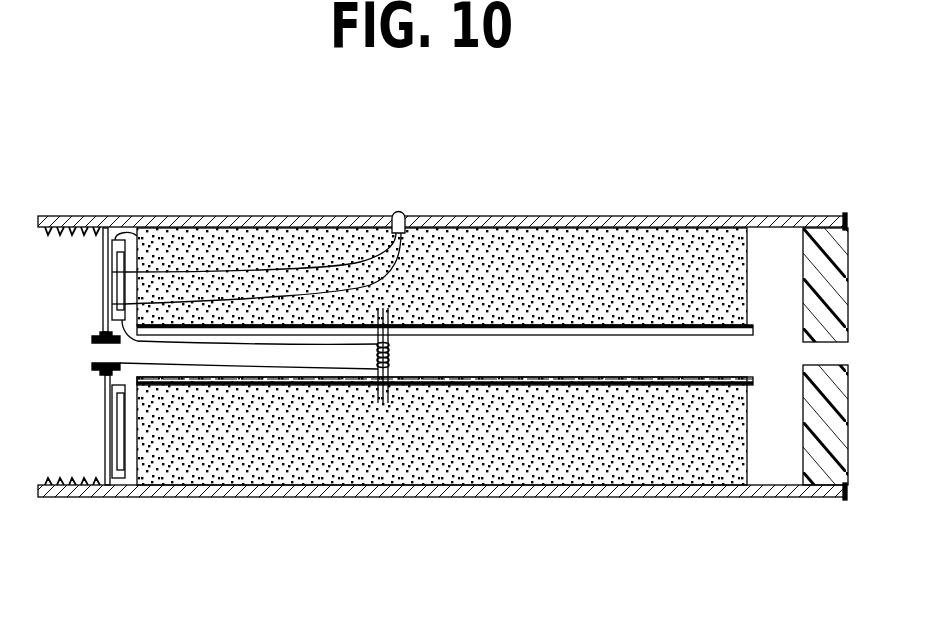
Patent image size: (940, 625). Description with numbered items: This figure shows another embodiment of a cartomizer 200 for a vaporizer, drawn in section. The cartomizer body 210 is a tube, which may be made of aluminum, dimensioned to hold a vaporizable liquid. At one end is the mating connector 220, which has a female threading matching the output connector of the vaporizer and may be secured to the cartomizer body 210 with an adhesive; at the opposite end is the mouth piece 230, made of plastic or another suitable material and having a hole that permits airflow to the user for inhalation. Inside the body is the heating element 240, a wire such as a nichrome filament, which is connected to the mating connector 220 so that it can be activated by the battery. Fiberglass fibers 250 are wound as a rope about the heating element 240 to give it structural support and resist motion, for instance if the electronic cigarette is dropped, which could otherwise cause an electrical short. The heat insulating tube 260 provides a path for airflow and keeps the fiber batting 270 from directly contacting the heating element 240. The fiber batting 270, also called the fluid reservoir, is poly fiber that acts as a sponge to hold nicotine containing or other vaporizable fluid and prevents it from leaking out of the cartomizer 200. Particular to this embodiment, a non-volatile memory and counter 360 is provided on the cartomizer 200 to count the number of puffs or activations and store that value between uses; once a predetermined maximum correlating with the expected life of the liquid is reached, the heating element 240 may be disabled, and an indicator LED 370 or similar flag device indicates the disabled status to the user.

The cartomizer 200 is at (238, 170).
The cartomizer body 210 is at (333, 216).
The mating connector 220 is at (65, 216).
The mouth piece 230 is at (851, 280).
The heating element 240 is at (325, 386).
The fiberglass fibers 250 is at (372, 398).
The heat insulating tube 260 is at (675, 386).
The fiber batting 270 is at (450, 440).
The non-volatile memory and counter 360 is at (103, 262).
The indicator LED 370 is at (398, 212).